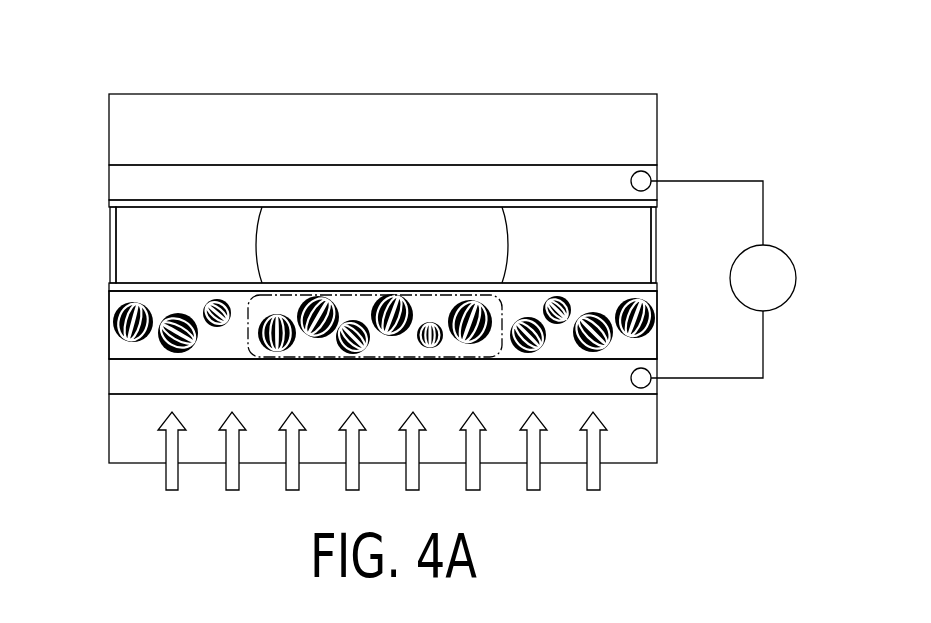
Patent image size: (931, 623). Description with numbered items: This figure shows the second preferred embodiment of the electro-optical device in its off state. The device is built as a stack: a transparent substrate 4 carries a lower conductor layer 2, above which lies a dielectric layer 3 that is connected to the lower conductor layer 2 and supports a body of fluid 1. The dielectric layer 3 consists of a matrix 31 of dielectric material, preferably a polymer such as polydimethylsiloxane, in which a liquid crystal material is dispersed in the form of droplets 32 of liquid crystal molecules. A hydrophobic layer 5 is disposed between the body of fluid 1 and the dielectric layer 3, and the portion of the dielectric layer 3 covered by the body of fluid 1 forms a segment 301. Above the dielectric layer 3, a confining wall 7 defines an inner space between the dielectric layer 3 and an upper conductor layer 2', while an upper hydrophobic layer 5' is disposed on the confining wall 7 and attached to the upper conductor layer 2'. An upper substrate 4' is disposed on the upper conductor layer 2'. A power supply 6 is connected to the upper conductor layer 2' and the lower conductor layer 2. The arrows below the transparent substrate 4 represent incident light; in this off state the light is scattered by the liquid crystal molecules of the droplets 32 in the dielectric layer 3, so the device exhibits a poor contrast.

The upper substrate 4' is at (383, 86).
The upper conductor layer 2' is at (345, 176).
The upper hydrophobic layer 5' is at (345, 202).
The body of fluid 1 is at (262, 242).
The confining wall 7 is at (656, 227).
The hydrophobic layer 5 is at (346, 283).
The dielectric layer 3 is at (125, 352).
The matrix 31 is at (641, 347).
The droplets 32 is at (128, 316).
The segment 301 is at (467, 345).
The lower conductor layer 2 is at (347, 383).
The transparent substrate 4 is at (346, 442).
The power supply 6 is at (763, 212).